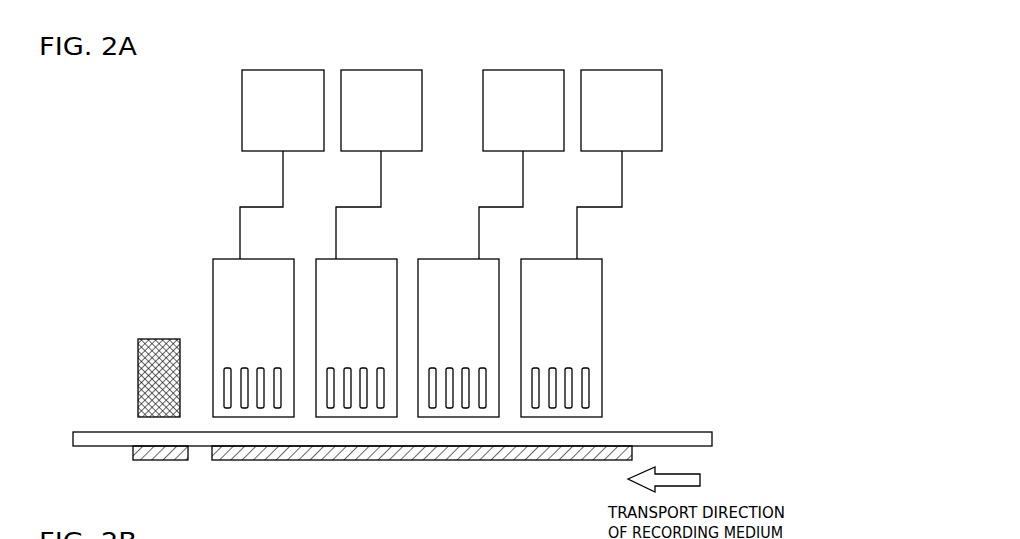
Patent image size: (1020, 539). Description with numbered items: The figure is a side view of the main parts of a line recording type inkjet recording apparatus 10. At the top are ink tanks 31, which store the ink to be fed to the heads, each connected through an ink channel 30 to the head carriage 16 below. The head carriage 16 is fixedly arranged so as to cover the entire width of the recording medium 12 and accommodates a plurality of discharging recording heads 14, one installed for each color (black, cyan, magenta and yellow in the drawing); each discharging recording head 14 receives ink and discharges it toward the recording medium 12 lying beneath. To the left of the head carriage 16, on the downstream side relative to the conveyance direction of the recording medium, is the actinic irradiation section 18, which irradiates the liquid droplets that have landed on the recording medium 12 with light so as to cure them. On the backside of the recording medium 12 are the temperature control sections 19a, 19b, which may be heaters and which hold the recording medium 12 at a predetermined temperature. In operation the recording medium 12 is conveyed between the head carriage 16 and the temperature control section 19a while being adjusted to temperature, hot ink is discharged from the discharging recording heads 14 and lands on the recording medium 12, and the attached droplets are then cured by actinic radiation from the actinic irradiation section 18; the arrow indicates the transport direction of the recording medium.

The inkjet recording apparatus 10 is at (693, 224).
The recording medium 12 is at (684, 432).
The discharging recording head 14 is at (589, 386).
The head carriage 16 is at (432, 290).
The actinic irradiation section 18 is at (161, 339).
The temperature control section 19a is at (528, 462).
The temperature control section 19b is at (167, 462).
The ink channel 30 is at (623, 185).
The ink tank 31 is at (282, 70).